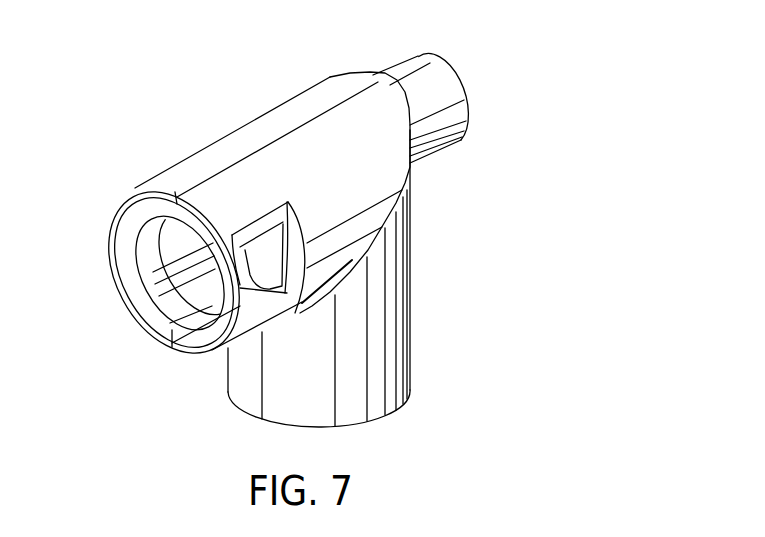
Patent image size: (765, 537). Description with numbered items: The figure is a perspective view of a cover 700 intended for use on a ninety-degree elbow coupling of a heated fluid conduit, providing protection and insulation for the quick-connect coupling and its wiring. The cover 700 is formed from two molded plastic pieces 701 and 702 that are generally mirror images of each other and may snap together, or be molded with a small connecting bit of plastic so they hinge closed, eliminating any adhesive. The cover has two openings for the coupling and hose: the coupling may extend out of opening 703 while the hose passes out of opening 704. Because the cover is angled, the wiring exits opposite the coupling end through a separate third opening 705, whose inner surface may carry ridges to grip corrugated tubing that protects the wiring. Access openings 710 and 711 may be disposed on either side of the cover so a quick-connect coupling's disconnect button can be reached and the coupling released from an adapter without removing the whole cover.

The cover 700 is at (158, 172).
The cover piece 701 is at (237, 124).
The cover piece 702 is at (425, 342).
The opening 703 is at (166, 356).
The opening 704 is at (377, 423).
The third opening 705 is at (462, 73).
The access opening 710 is at (258, 337).
The access opening 711 is at (140, 268).